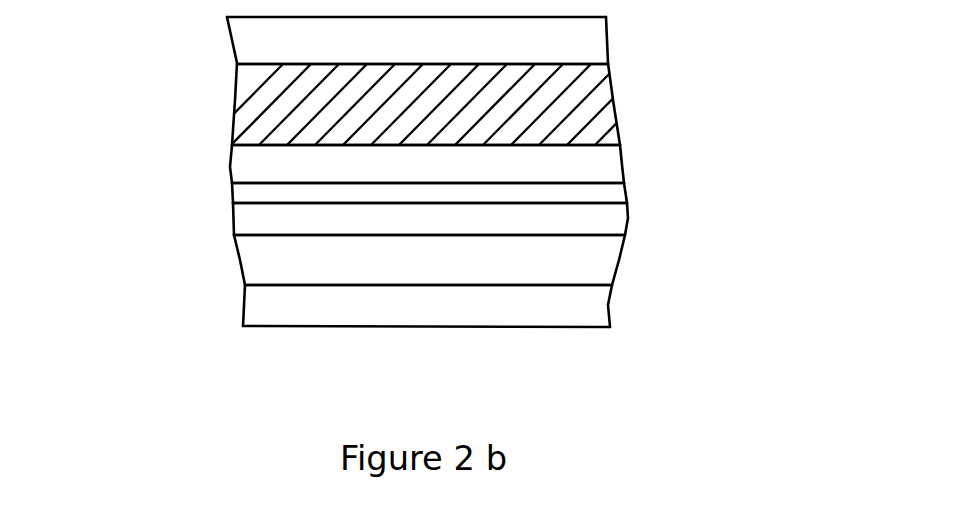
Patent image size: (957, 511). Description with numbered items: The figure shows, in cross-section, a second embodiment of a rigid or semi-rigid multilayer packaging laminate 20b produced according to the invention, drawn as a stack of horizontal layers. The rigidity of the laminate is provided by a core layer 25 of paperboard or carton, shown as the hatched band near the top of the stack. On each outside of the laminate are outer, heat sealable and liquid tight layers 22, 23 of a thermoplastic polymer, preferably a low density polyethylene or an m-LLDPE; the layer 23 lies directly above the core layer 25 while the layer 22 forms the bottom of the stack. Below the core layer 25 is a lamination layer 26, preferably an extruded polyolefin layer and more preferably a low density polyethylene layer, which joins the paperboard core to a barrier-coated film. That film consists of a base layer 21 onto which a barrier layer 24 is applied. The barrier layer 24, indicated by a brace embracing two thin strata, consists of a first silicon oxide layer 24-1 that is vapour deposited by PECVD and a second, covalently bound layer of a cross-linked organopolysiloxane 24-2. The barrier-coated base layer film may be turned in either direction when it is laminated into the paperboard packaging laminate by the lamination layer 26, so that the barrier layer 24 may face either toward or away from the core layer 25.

The multilayer packaging laminate 20b is at (60, 179).
The base layer 21 is at (597, 259).
The outer heat sealable and liquid tight layer 22 is at (583, 306).
The outer heat sealable and liquid tight layer 23 is at (585, 37).
The barrier layer 24 is at (564, 214).
The silicon oxide layer 24-1 is at (610, 219).
The cross-linked organopolysiloxane layer 24-2 is at (603, 194).
The core layer 25 is at (589, 100).
The lamination layer 26 is at (595, 165).